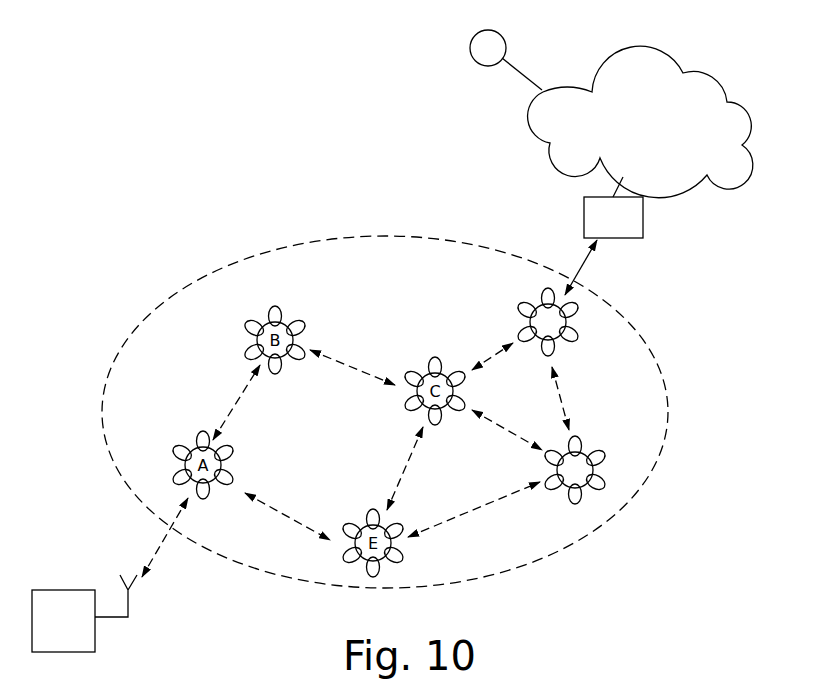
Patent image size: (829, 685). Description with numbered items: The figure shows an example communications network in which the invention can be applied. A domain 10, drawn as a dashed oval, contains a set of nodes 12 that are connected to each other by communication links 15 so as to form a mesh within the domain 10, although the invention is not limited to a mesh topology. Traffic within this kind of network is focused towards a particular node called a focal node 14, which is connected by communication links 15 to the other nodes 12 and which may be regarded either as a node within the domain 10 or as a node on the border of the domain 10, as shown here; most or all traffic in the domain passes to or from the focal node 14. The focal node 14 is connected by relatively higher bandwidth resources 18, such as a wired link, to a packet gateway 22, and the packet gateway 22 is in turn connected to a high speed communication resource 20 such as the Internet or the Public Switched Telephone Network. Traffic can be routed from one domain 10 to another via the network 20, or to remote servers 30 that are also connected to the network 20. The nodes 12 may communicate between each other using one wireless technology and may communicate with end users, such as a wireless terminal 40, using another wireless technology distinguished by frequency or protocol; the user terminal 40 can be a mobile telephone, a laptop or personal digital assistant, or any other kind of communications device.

The domain 10 is at (198, 278).
The node 12 is at (587, 453).
The focal node 14 is at (537, 306).
The communication link 15 is at (499, 434).
The higher bandwidth resource 18 is at (587, 267).
The high speed communication resource 20 is at (648, 132).
The packet gateway 22 is at (623, 230).
The remote server 30 is at (495, 27).
The wireless terminal 40 is at (73, 632).